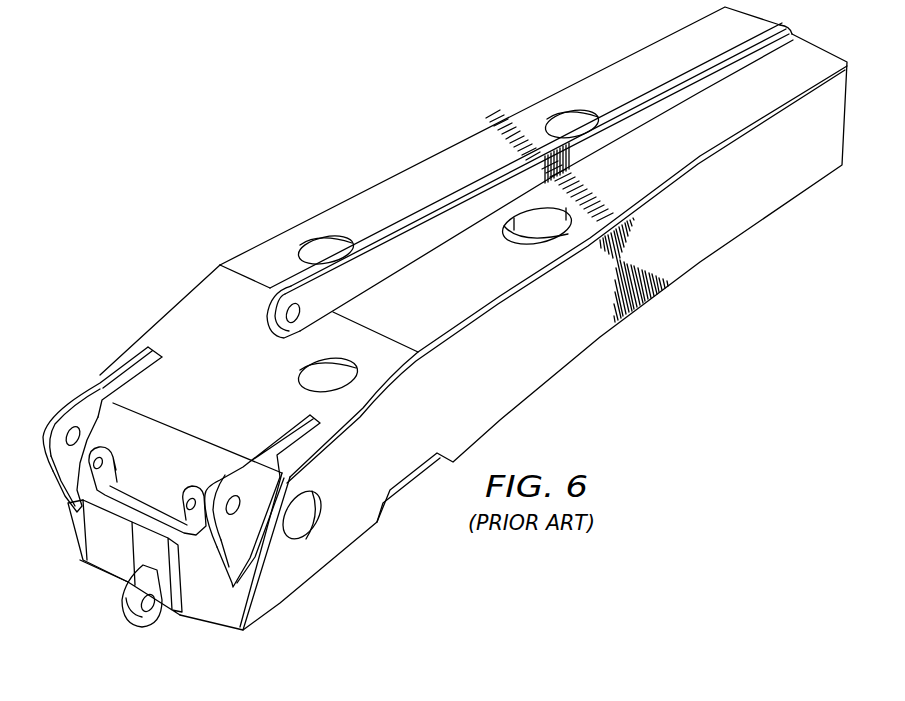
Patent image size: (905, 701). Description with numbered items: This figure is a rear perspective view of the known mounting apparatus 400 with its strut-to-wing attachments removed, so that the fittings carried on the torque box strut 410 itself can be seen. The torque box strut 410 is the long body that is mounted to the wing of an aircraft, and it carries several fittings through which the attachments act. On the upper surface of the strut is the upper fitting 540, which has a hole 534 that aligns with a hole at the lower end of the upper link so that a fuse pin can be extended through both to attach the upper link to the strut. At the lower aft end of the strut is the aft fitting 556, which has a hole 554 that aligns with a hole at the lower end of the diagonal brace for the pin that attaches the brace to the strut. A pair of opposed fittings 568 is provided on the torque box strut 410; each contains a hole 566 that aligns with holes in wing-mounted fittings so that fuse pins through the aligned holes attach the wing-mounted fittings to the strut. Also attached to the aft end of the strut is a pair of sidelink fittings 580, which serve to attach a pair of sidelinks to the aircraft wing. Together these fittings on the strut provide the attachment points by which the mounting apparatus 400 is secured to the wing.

The mounting apparatus 400 is at (429, 342).
The torque box strut 410 is at (700, 287).
The upper fitting 540 is at (408, 257).
The hole 534 is at (292, 324).
The opposed fittings 568 is at (66, 414).
The holes 566 is at (66, 445).
The sidelink fittings 580 is at (180, 491).
The aft fitting 556 is at (128, 627).
The hole 554 is at (157, 612).